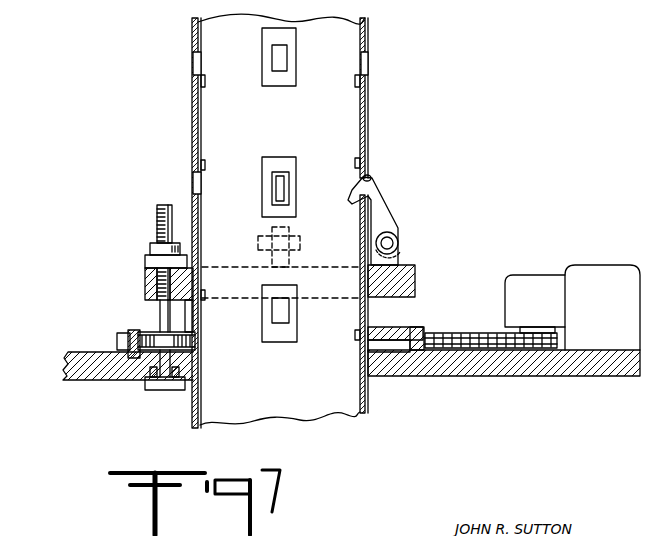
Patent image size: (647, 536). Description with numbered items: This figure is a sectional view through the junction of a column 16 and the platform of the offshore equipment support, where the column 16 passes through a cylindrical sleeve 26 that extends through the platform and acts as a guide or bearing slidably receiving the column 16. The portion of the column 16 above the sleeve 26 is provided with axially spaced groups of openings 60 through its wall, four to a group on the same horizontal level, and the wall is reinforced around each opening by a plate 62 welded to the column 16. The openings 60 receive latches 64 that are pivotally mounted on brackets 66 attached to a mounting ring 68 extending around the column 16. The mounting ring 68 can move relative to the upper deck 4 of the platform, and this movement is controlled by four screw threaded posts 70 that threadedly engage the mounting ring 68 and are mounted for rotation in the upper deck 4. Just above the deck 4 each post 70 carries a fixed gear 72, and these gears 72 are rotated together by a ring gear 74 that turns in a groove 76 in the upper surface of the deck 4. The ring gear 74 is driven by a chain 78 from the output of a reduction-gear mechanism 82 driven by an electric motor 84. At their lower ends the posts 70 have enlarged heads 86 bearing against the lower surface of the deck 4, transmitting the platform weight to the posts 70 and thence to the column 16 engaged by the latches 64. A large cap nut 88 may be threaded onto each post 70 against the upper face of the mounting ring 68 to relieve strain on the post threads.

The upper deck 4 is at (112, 352).
The column 16 is at (202, 410).
The cylindrical sleeve 26 is at (192, 410).
The openings 60 is at (200, 62).
The plate 62 is at (201, 81).
The latches 64 is at (386, 214).
The brackets 66 is at (402, 254).
The mounting ring 68 is at (416, 284).
The screw threaded posts 70 is at (157, 216).
The gears 72 is at (157, 332).
The ring gear 74 is at (127, 334).
The groove 76 is at (130, 380).
The chain 78 is at (458, 333).
The reduction-gear mechanism 82 is at (535, 275).
The electric motor 84 is at (597, 265).
The enlarged heads 86 is at (161, 390).
The cap nut 88 is at (145, 263).